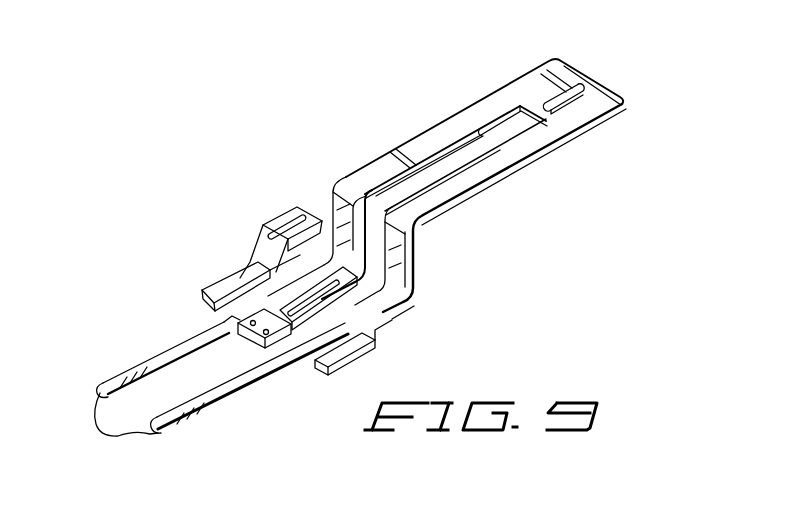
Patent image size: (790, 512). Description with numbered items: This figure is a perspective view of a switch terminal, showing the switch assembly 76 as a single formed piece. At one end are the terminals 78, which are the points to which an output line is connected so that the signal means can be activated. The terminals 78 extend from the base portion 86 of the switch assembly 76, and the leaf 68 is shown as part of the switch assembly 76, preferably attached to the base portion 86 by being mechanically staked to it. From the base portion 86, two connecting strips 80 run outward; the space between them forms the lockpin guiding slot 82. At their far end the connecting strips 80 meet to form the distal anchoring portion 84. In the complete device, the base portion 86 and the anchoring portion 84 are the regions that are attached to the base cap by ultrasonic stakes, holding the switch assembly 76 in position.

The distal anchoring portion 84 is at (563, 68).
The connecting strips 80 is at (392, 158).
The lockpin guiding slot 82 is at (482, 157).
The switch assembly 76 is at (432, 252).
The base portion 86 is at (403, 302).
The leaf 68 is at (370, 307).
The terminals 78 is at (100, 434).